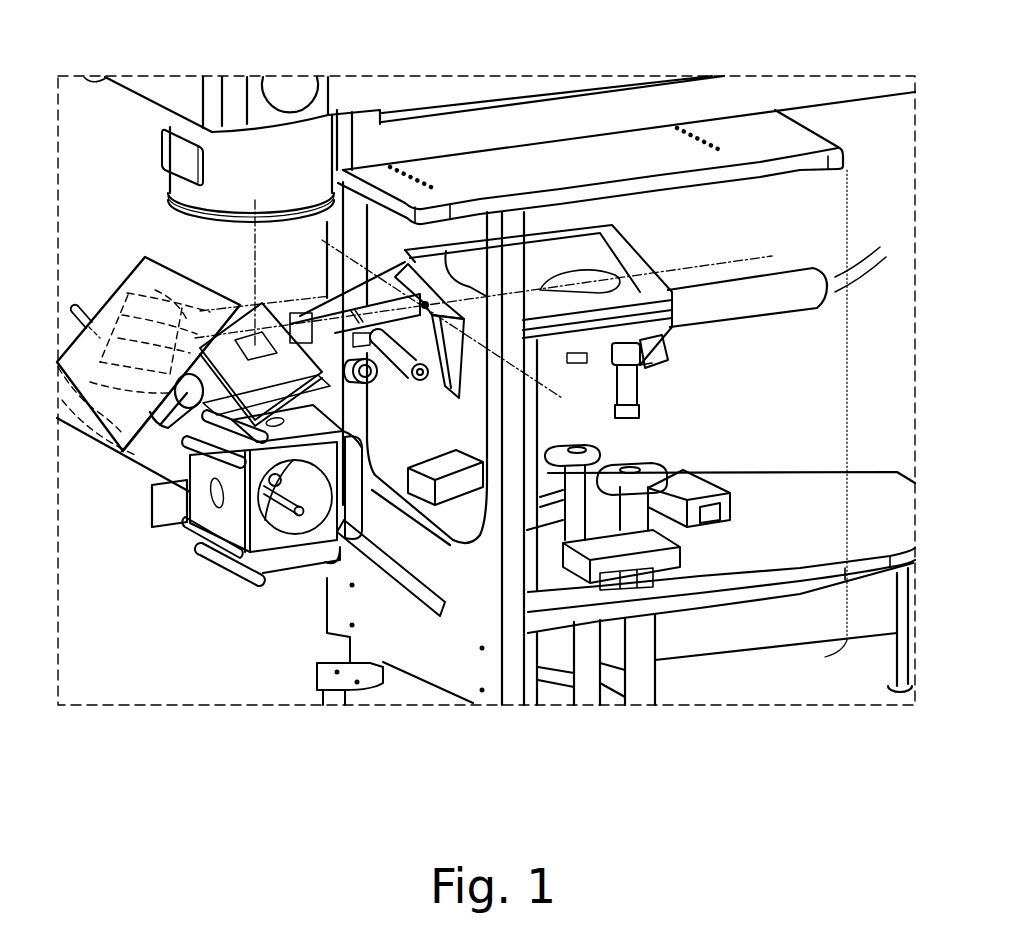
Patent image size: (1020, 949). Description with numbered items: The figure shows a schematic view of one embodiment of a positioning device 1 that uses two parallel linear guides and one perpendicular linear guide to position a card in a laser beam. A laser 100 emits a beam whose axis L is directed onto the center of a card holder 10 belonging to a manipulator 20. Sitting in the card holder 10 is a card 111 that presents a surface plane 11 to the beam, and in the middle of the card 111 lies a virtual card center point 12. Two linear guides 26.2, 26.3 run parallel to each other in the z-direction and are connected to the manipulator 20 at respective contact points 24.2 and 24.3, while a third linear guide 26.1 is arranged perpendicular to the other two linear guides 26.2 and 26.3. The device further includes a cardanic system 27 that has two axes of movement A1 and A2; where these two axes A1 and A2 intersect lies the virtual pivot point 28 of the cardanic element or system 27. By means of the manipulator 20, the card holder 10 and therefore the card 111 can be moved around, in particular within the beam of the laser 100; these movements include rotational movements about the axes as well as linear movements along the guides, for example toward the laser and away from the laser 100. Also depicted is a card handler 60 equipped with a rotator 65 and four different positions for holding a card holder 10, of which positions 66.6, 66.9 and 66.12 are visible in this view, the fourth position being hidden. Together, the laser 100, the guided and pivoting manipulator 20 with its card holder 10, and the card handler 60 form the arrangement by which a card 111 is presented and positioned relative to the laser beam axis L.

The device for processing a workpiece 1 is at (658, 378).
The card holder 10 is at (268, 304).
The surface plane 11 is at (208, 322).
The card 111 is at (148, 330).
The virtual card center point 12 is at (256, 343).
The manipulator 20 is at (425, 303).
The contact point 24.2 is at (568, 357).
The contact point 24.3 is at (660, 354).
The perpendicular linear guide 26.1 is at (766, 292).
The parallel linear guide 26.2 is at (587, 690).
The parallel linear guide 26.3 is at (637, 692).
The cardanic system 27 is at (848, 433).
The virtual pivot point 28 is at (428, 276).
The card handler 60 is at (212, 525).
The rotator 65 is at (298, 515).
The position 66.6 is at (278, 580).
The position 66.9 is at (248, 440).
The position 66.12 is at (255, 438).
The laser 100 is at (187, 184).
The axis of movement A1 is at (710, 262).
The axis of movement A2 is at (540, 386).
The axis of the laser beam L is at (256, 266).